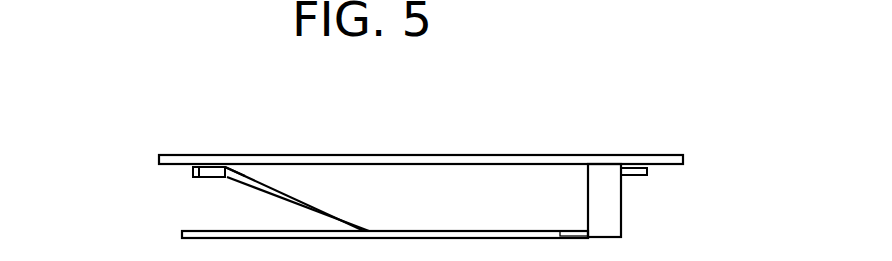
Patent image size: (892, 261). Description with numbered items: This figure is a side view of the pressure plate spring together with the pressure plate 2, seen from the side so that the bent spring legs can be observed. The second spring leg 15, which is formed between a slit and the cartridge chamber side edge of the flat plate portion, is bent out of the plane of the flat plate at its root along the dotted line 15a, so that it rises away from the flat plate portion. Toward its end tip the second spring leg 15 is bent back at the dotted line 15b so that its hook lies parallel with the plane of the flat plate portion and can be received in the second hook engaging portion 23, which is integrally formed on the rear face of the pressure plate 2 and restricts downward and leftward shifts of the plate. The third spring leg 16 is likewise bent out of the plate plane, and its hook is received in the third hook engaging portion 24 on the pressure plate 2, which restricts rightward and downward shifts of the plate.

The pressure plate 2 is at (427, 155).
The second hook engaging portion 23 is at (193, 172).
The second spring leg 15 is at (314, 206).
The dotted line 15b is at (225, 178).
The dotted line 15a is at (377, 228).
The third spring leg 16 is at (621, 202).
The third hook engaging portion 24 is at (647, 172).